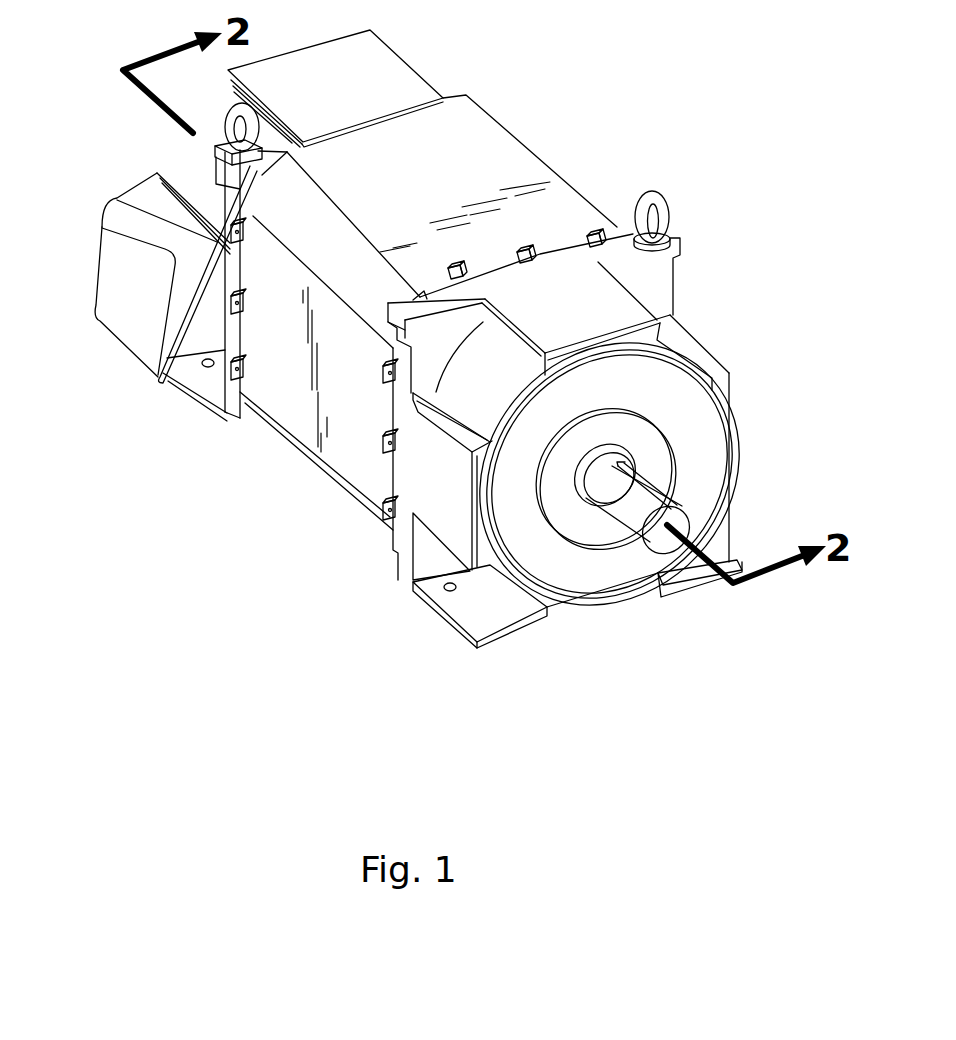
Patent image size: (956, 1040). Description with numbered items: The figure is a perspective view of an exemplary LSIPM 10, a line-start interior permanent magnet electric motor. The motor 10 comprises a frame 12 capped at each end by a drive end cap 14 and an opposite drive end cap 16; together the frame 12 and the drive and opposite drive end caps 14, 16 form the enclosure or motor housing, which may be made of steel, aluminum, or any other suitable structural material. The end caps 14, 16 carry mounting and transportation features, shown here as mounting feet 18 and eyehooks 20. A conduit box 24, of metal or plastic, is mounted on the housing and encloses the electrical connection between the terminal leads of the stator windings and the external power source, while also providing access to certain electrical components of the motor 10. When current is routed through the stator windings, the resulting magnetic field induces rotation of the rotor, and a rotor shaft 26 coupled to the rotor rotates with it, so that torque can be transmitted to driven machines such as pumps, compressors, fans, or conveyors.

The LSIPM 10 is at (206, 478).
The frame 12 is at (511, 141).
The drive end cap 14 is at (632, 317).
The opposite drive end cap 16 is at (432, 90).
The mounting feet 18 is at (470, 612).
The eyehooks 20 is at (650, 190).
The conduit box 24 is at (117, 272).
The rotor shaft 26 is at (680, 493).